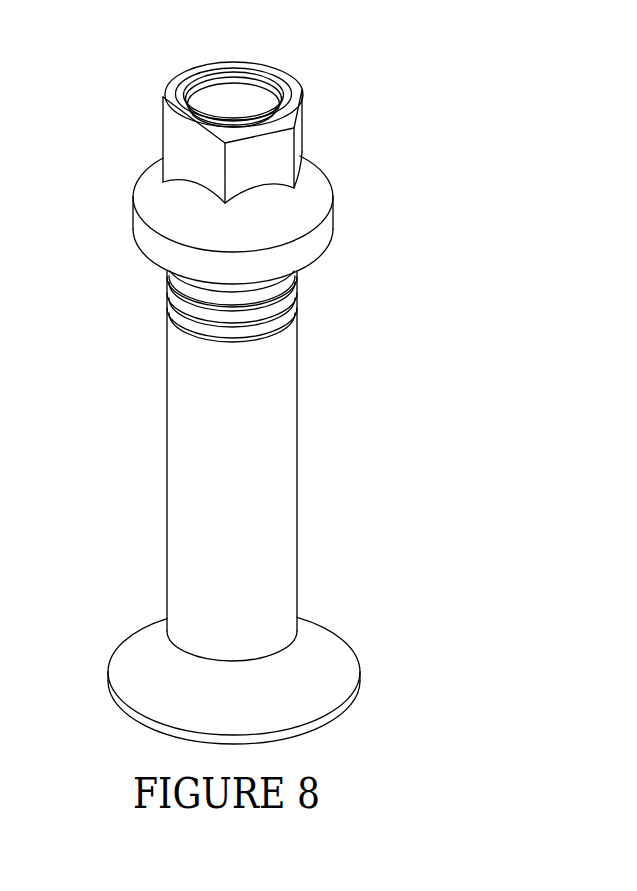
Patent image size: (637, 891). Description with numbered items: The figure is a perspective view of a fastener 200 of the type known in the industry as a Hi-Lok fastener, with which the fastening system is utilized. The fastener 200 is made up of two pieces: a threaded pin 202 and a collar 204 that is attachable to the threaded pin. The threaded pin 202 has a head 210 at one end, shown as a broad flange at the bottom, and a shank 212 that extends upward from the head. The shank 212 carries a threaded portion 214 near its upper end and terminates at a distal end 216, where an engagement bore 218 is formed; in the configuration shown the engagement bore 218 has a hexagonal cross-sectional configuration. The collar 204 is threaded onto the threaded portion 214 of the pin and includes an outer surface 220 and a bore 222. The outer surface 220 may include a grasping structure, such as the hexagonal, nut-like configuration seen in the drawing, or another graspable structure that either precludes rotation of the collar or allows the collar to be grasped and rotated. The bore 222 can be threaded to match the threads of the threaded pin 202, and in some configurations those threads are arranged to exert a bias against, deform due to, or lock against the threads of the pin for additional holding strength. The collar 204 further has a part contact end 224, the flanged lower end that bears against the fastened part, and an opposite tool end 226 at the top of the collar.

The fastener 200 is at (397, 427).
The threaded pin 202 is at (116, 488).
The collar 204 is at (99, 225).
The head 210 is at (357, 682).
The shank 212 is at (297, 505).
The threaded portion 214 is at (298, 317).
The distal end 216 is at (233, 118).
The engagement bore 218 is at (260, 123).
The outer surface 220 is at (163, 100).
The bore 222 is at (253, 72).
The part contact end 224 is at (322, 260).
The tool end 226 is at (180, 78).